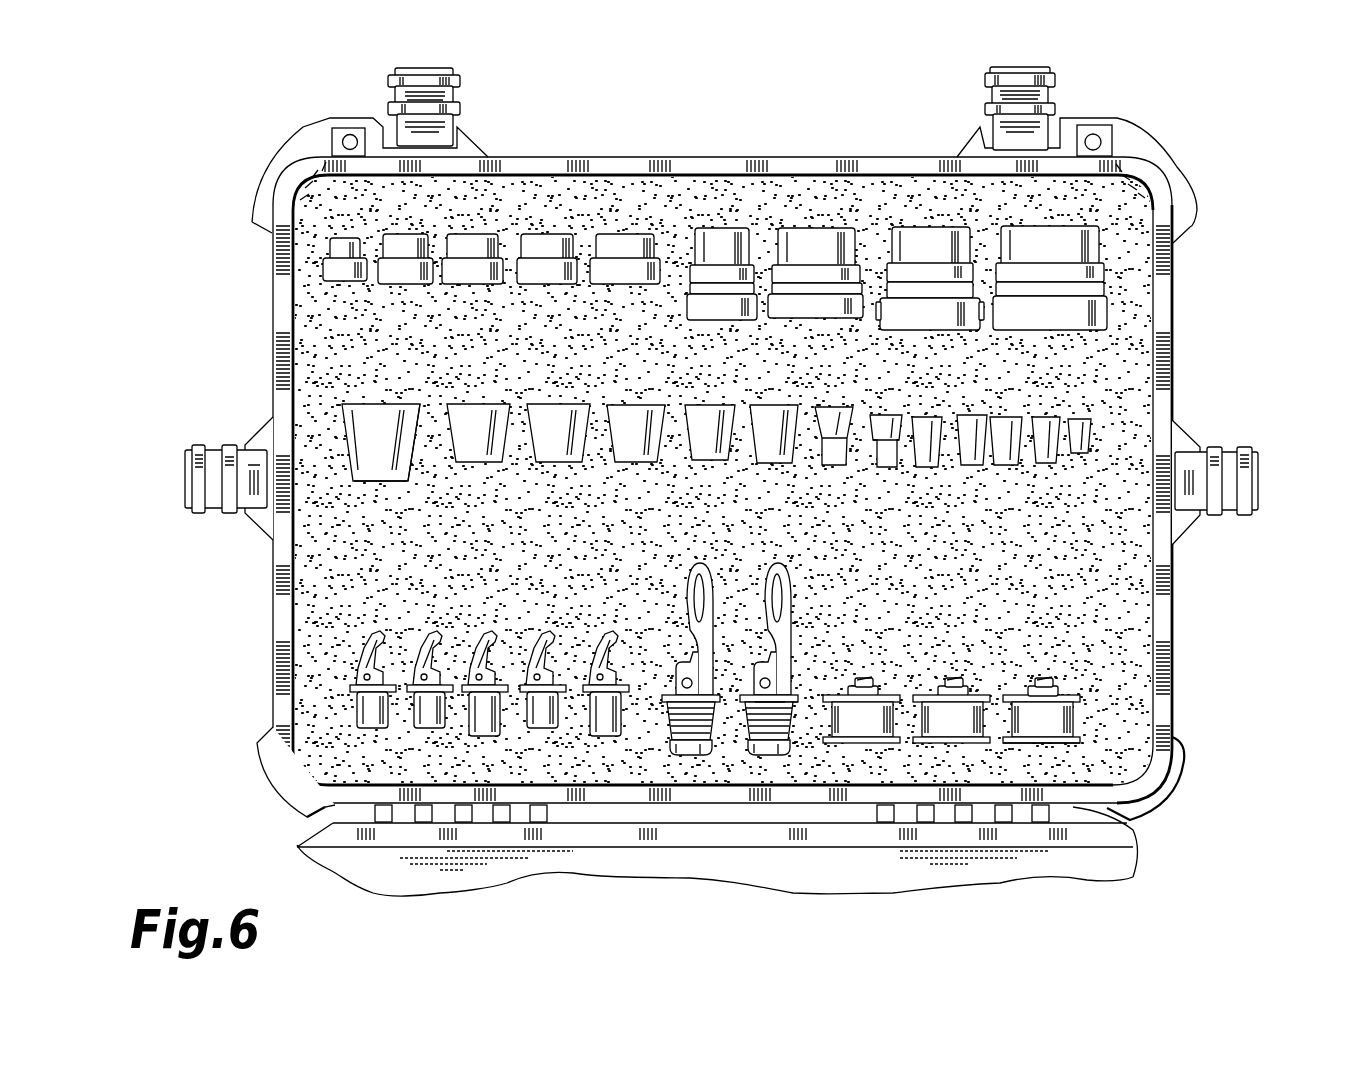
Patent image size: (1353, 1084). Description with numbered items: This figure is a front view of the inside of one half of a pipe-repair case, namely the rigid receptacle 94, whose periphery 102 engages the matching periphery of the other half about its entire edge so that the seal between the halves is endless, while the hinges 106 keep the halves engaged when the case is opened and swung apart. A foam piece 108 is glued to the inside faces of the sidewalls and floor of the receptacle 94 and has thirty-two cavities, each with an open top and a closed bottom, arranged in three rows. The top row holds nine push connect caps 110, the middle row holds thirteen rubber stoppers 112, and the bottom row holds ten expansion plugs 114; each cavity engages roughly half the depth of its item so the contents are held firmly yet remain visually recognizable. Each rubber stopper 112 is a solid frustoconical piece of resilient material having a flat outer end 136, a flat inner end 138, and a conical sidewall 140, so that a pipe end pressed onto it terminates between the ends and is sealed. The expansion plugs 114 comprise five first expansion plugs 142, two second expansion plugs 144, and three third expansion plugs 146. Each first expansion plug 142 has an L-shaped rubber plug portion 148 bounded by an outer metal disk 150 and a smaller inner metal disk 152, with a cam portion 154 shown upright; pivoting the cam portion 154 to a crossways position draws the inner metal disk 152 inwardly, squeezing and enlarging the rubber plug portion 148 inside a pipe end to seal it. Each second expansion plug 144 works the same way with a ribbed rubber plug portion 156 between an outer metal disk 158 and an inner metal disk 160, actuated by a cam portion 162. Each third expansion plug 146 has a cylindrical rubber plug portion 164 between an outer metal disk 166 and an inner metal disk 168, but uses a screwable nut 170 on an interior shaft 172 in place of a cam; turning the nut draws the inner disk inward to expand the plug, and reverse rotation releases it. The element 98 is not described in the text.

The receptacle 94 is at (690, 155).
The hose connector 98 is at (428, 69).
The periphery 102 is at (1173, 360).
The hinges 106 is at (1067, 814).
The foam piece 108 is at (1128, 627).
The push connect caps 110 is at (1108, 317).
The rubber stoppers 112 is at (393, 402).
The expansion plugs 114 is at (355, 706).
The flat outer end 136 is at (360, 403).
The flat inner end 138 is at (373, 486).
The conical sidewall 140 is at (418, 455).
The first expansion plug 142 is at (357, 715).
The second expansion plug 144 is at (777, 752).
The third expansion plug 146 is at (1077, 750).
The L-shaped rubber plug portion 148 is at (590, 712).
The outer metal disk 150 is at (613, 640).
The inner metal disk 152 is at (592, 712).
The cam portion 154 is at (533, 640).
The ribbed rubber plug portion 156 is at (740, 718).
The outer metal disk 158 is at (797, 698).
The inner metal disk 160 is at (767, 752).
The cam portion 162 is at (795, 592).
The rubber plug portion 164 is at (910, 740).
The outer metal disk 166 is at (1078, 698).
The inner metal disk 168 is at (963, 744).
The screwable nut 170 is at (1047, 692).
The interior shaft 172 is at (1030, 687).